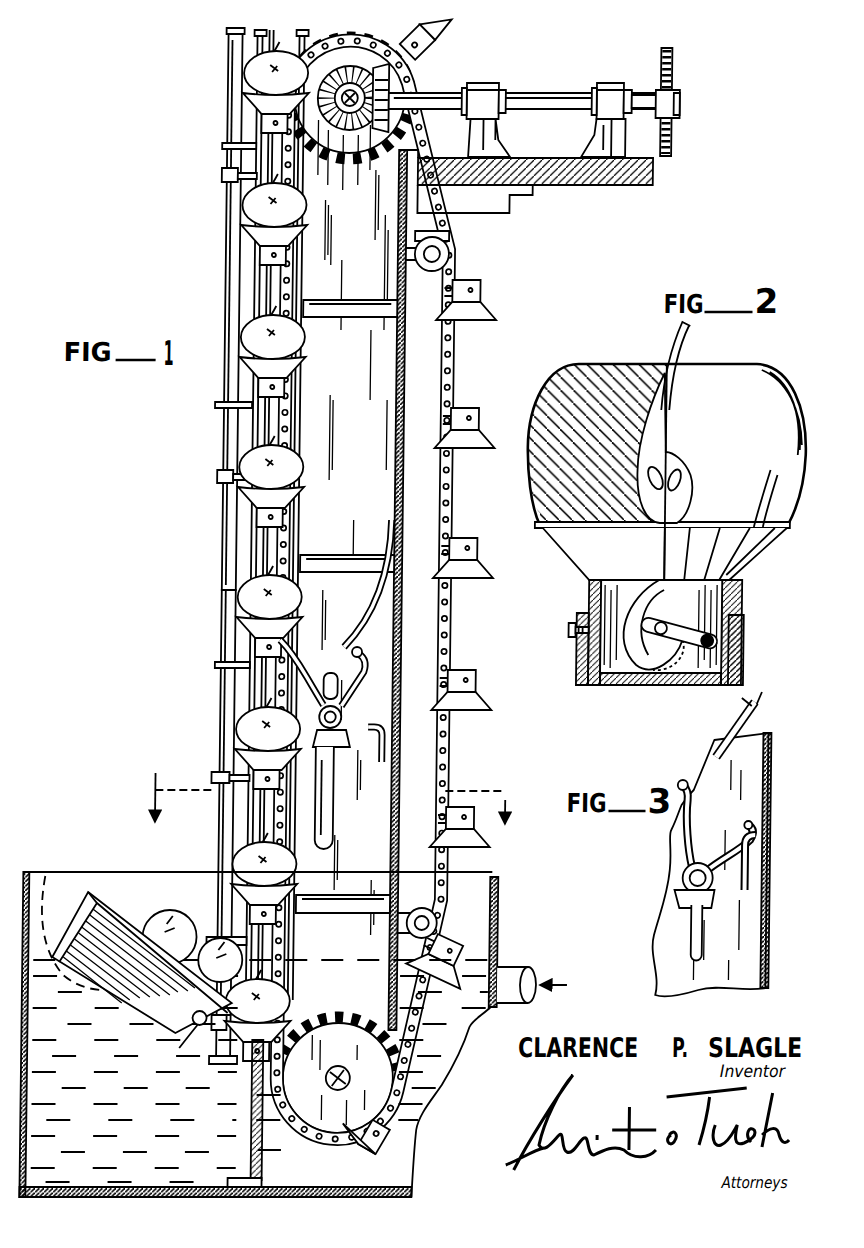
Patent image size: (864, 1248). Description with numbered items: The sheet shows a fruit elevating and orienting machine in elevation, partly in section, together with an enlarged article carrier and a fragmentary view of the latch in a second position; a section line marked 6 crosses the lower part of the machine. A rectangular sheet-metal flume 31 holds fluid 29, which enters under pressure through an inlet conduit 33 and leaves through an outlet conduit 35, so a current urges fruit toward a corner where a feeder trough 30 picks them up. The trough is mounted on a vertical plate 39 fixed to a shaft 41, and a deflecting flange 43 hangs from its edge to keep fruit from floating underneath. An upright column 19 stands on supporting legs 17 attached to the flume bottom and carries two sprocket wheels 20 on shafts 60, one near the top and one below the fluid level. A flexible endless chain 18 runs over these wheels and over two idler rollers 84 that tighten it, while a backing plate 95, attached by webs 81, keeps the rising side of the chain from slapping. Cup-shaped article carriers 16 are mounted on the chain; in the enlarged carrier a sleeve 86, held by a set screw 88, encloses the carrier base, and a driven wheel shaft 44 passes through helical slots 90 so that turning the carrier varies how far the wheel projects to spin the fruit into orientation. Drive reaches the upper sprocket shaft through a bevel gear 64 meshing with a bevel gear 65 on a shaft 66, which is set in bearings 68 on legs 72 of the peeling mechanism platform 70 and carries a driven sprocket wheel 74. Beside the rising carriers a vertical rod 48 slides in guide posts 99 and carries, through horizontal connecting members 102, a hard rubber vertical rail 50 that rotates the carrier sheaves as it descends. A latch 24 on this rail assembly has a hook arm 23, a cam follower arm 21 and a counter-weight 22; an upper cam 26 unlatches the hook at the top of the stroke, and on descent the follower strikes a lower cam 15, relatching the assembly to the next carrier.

In FIG. 1, the lower cam 15 is at (396, 757).
In FIG. 3, the lower cam 15 is at (752, 877).
In FIG. 1, the cup-shaped article carrier 16 is at (257, 96).
In FIG. 2, the cup-shaped article carrier 16 is at (750, 550).
In FIG. 1, the supporting legs 17 is at (382, 1178).
In FIG. 1, the flexible endless chain 18 is at (460, 490).
In FIG. 1, the upright column 19 is at (321, 391).
In FIG. 1, the sprocket wheels 20 is at (322, 152).
In FIG. 1, the cam follower arm 21 is at (372, 664).
In FIG. 1, the counter-weight 22 is at (345, 753).
In FIG. 3, the counter-weight 22 is at (692, 896).
In FIG. 1, the hook arm 23 is at (314, 675).
In FIG. 1, the latch 24 is at (329, 713).
In FIG. 3, the latch 24 is at (692, 862).
In FIG. 1, the upper cam 26 is at (386, 618).
In FIG. 3, the upper cam 26 is at (757, 708).
In FIG. 1, the fluid 29 is at (116, 1104).
In FIG. 1, the feeder trough 30 is at (120, 915).
In FIG. 1, the flume 31 is at (509, 899).
In FIG. 1, the inlet conduit 33 is at (525, 968).
In FIG. 1, the outlet conduit 35 is at (56, 876).
In FIG. 1, the vertical plate 39 is at (232, 1056).
In FIG. 1, the shaft 41 is at (207, 1024).
In FIG. 1, the deflecting flange 43 is at (163, 1000).
In FIG. 2, the shaft 44 is at (665, 640).
In FIG. 1, the vertical rod 48 is at (230, 588).
In FIG. 1, the vertical rail 50 is at (232, 30).
In FIG. 1, the sprocket wheel shafts 60 is at (426, 36).
In FIG. 1, the bevel gear 64 is at (357, 136).
In FIG. 1, the bevel gear 65 is at (360, 92).
In FIG. 1, the shaft 66 is at (525, 93).
In FIG. 1, the bearings 68 is at (485, 83).
In FIG. 1, the peeling mechanism platform 70 is at (570, 174).
In FIG. 1, the legs 72 is at (600, 146).
In FIG. 1, the driven sprocket wheel 74 is at (674, 63).
In FIG. 1, the webs 81 is at (362, 300).
In FIG. 1, the idler rollers 84 is at (453, 258).
In FIG. 2, the sleeve 86 is at (737, 643).
In FIG. 2, the set screw 88 is at (573, 630).
In FIG. 2, the helical slots 90 is at (707, 627).
In FIG. 1, the backing plate 95 is at (304, 270).
In FIG. 1, the guide posts 99 is at (226, 180).
In FIG. 1, the horizontal connecting members 102 is at (226, 146).
In FIG. 1, the section line 6 is at (330, 818).